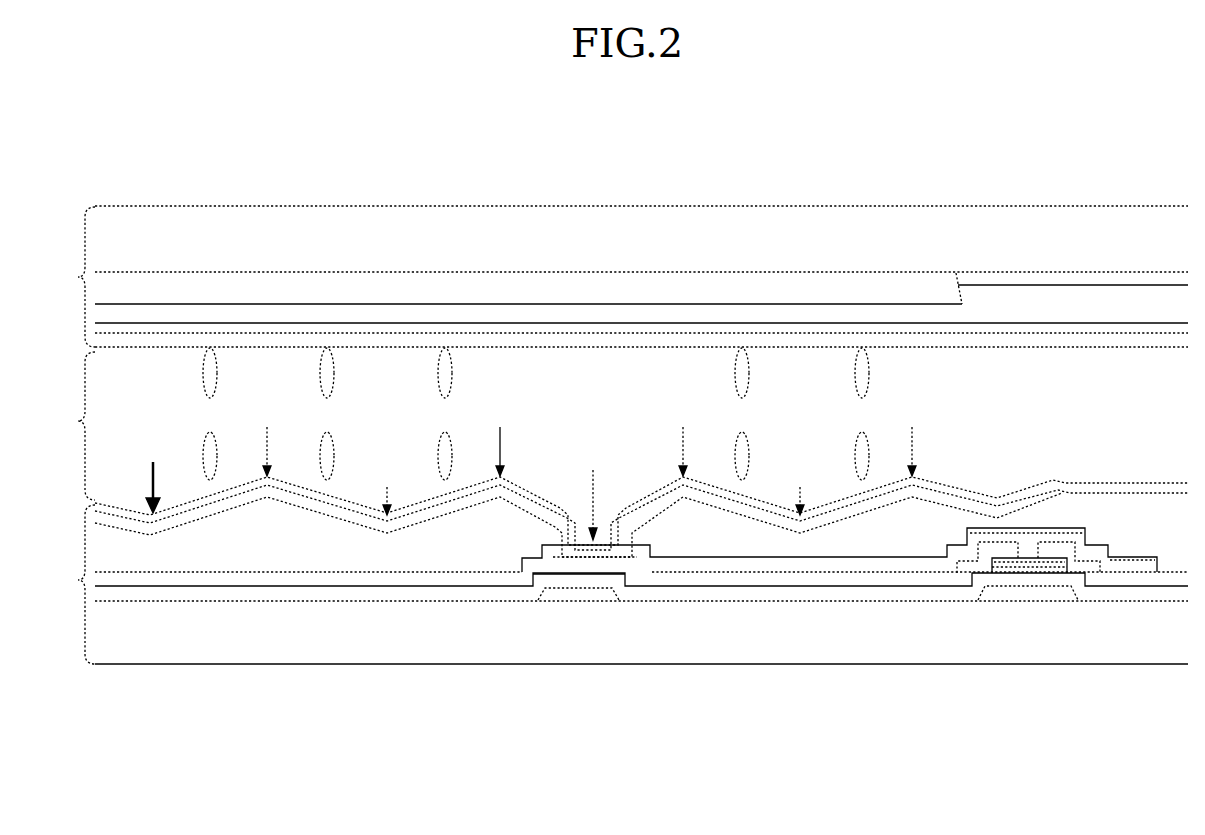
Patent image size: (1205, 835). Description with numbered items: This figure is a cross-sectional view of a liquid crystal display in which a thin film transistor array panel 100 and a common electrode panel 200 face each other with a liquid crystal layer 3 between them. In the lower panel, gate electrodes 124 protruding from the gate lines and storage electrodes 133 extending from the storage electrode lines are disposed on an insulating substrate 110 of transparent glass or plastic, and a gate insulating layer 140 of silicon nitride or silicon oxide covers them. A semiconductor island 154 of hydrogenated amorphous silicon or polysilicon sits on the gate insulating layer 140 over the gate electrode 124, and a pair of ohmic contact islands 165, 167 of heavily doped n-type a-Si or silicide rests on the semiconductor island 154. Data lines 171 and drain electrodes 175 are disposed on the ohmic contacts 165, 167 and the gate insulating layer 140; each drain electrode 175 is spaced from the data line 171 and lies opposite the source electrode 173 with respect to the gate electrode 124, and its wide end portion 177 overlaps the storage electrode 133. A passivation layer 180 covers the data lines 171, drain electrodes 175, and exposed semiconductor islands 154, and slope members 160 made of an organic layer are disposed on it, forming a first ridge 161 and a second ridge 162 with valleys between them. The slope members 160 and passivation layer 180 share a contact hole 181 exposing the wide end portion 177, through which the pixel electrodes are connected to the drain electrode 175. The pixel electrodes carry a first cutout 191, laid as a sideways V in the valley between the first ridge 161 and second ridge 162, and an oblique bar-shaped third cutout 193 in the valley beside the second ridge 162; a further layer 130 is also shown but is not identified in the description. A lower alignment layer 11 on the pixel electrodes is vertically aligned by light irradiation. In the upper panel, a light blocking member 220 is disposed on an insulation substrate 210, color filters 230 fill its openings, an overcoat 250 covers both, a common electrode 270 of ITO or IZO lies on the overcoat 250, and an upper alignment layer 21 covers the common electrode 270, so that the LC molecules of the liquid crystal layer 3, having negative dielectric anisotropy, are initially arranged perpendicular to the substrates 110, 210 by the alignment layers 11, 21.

The liquid crystal layer 3 is at (464, 424).
The lower alignment layer 11 is at (222, 508).
The upper alignment layer 21 is at (832, 345).
The thin film transistor array panel 100 is at (67, 584).
The insulating substrate 110 is at (500, 638).
The gate electrode 124 is at (1047, 568).
The color filter 130 is at (293, 503).
The storage electrode 133 is at (567, 598).
The gate insulating layer 140 is at (362, 590).
The semiconductor island 154 is at (1015, 575).
The slope member 160 is at (437, 548).
The first ridge 161 is at (591, 439).
The second ridge 162 is at (589, 439).
The ohmic contact island 165 is at (1000, 562).
The ohmic contact island 167 is at (1050, 560).
The data line 171 is at (1135, 577).
The source electrode 173 is at (1082, 560).
The drain electrode 175 is at (697, 582).
The wide end portion 177 is at (598, 578).
The passivation layer 180 is at (790, 563).
The contact hole 181 is at (593, 493).
The first cutout 191 is at (591, 471).
The third cutout 193 is at (143, 458).
The common electrode panel 200 is at (67, 277).
The insulation substrate 210 is at (420, 236).
The light blocking member 220 is at (1008, 277).
The color filter 230 is at (522, 296).
The overcoat 250 is at (630, 316).
The common electrode 270 is at (727, 335).